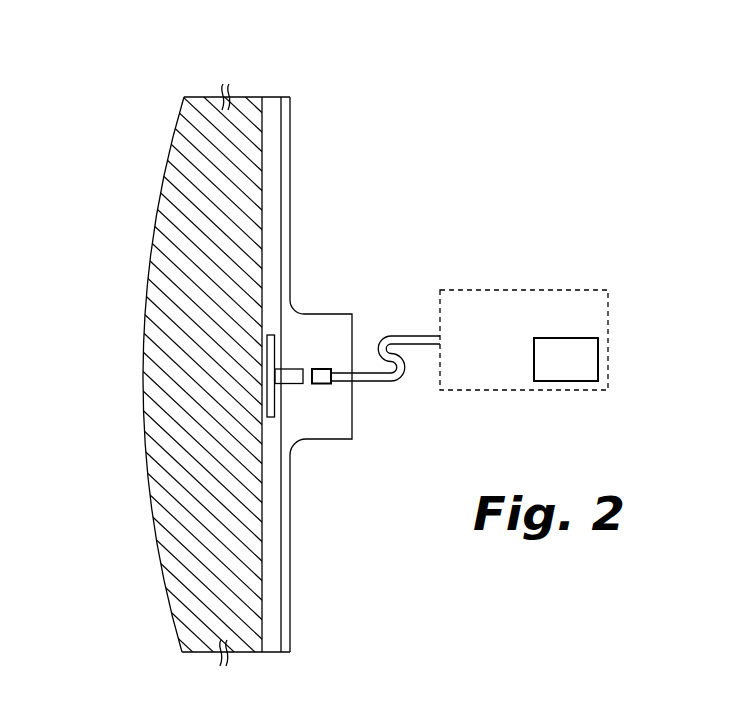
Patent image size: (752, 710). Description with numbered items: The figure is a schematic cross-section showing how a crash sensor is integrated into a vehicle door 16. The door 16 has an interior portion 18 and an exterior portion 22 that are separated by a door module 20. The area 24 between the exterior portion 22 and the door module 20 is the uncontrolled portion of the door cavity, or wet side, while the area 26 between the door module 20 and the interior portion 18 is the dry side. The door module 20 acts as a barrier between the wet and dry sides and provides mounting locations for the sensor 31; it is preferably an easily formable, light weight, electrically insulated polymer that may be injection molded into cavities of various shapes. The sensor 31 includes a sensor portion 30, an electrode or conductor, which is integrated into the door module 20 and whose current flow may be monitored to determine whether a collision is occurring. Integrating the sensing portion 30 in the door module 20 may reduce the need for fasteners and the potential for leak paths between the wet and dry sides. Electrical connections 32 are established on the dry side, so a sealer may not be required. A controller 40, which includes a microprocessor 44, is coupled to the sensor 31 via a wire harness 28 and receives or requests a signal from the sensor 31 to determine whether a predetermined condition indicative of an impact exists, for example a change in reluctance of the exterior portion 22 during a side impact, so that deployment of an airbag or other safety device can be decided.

The door 16 is at (237, 355).
The interior portion 18 is at (291, 553).
The door module 20 is at (326, 374).
The exterior portion 22 is at (143, 337).
The area between exterior portion and door module 24 is at (219, 388).
The area between door module and interior portion 26 is at (329, 352).
The wire harness 28 is at (332, 384).
The sensor portion 30 is at (271, 336).
The sensor 31 is at (287, 390).
The electrical connections 32 is at (425, 336).
The controller 40 is at (535, 316).
The microprocessor 44 is at (579, 373).